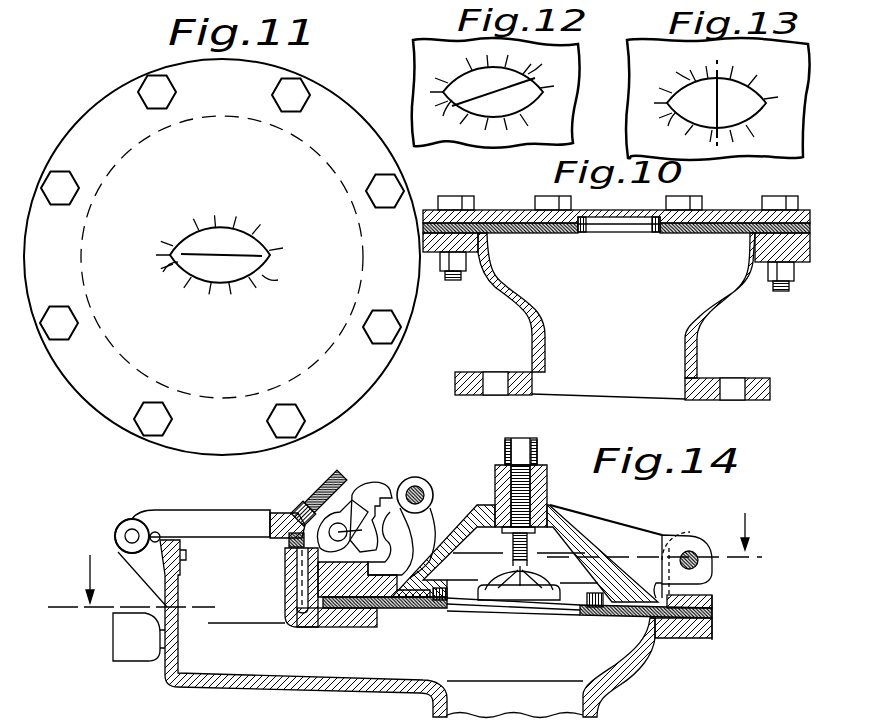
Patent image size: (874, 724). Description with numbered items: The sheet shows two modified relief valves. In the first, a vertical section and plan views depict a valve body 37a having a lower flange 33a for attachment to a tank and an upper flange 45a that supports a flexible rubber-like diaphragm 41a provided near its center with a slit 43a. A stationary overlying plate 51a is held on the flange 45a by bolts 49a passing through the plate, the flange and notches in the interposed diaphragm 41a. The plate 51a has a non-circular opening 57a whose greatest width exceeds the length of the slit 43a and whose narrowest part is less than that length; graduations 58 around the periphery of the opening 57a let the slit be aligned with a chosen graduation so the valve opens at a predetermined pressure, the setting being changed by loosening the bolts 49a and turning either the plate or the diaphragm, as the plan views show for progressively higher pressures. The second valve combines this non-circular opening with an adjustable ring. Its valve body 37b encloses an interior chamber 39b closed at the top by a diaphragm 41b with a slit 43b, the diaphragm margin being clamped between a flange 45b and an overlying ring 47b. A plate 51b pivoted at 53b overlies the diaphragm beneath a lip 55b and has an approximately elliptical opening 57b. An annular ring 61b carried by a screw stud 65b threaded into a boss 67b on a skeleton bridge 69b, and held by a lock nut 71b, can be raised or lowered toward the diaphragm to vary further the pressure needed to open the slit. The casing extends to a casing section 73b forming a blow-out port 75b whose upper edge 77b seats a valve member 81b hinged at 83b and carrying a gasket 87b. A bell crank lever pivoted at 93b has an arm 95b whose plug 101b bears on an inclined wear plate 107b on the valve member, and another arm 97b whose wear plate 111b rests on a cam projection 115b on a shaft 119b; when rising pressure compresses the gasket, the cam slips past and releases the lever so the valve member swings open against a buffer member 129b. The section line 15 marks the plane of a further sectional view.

In FIG. 10, the flange 33a is at (470, 379).
In FIG. 10, the valve body 37a is at (527, 283).
In FIG. 11, the diaphragm 41a is at (264, 277).
In FIG. 12, the diaphragm 41a is at (540, 65).
In FIG. 13, the diaphragm 41a is at (688, 80).
In FIG. 10, the diaphragm 41a is at (724, 246).
In FIG. 11, the slit 43a is at (258, 240).
In FIG. 12, the slit 43a is at (493, 92).
In FIG. 13, the slit 43a is at (716, 103).
In FIG. 10, the slit 43a is at (618, 232).
In FIG. 10, the flange 45a is at (426, 253).
In FIG. 11, the bolts 49a is at (378, 185).
In FIG. 10, the bolts 49a is at (766, 200).
In FIG. 11, the plate 51a is at (222, 257).
In FIG. 12, the plate 51a is at (421, 52).
In FIG. 13, the plate 51a is at (630, 60).
In FIG. 10, the plate 51a is at (497, 209).
In FIG. 11, the opening 57a is at (210, 230).
In FIG. 12, the opening 57a is at (522, 112).
In FIG. 13, the opening 57a is at (746, 122).
In FIG. 10, the opening 57a is at (586, 218).
In FIG. 11, the graduations 58 is at (176, 265).
In FIG. 12, the graduations 58 is at (470, 118).
In FIG. 13, the graduations 58 is at (690, 130).
In FIG. 14, the section line 15 is at (36, 606).
In FIG. 14, the valve body 37b is at (648, 672).
In FIG. 14, the interior chamber 39b is at (560, 616).
In FIG. 14, the diaphragm 41b is at (419, 617).
In FIG. 14, the slit 43b is at (590, 616).
In FIG. 14, the flange 45b is at (371, 630).
In FIG. 14, the ring 47b is at (330, 628).
In FIG. 14, the plate 51b is at (652, 620).
In FIG. 14, the pivot pin 53b is at (694, 551).
In FIG. 14, the lip 55b is at (398, 556).
In FIG. 14, the opening 57b is at (476, 608).
In FIG. 14, the annular ring 61b is at (545, 582).
In FIG. 14, the screw stud 65b is at (503, 542).
In FIG. 14, the threaded boss 67b is at (548, 500).
In FIG. 14, the bridge 69b is at (608, 522).
In FIG. 14, the lock nut 71b is at (558, 513).
In FIG. 14, the casing section 73b is at (275, 578).
In FIG. 14, the blow out port 75b is at (271, 580).
In FIG. 14, the valve seat 77b is at (190, 550).
In FIG. 14, the valve member 81b is at (197, 505).
In FIG. 14, the hinge 83b is at (122, 532).
In FIG. 14, the gasket 87b is at (288, 548).
In FIG. 14, the pivot 93b is at (342, 522).
In FIG. 14, the arm 95b is at (325, 488).
In FIG. 14, the arm 97b is at (368, 488).
In FIG. 14, the plug 101b is at (290, 474).
In FIG. 14, the wear plate 107b is at (262, 501).
In FIG. 14, the wear plate 111b is at (425, 448).
In FIG. 14, the cam projection 115b is at (432, 506).
In FIG. 14, the shaft 119b is at (432, 490).
In FIG. 14, the buffer member 129b is at (120, 688).